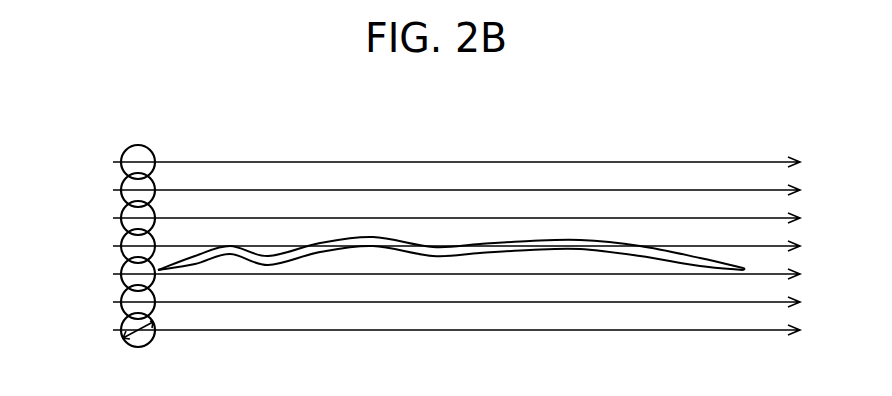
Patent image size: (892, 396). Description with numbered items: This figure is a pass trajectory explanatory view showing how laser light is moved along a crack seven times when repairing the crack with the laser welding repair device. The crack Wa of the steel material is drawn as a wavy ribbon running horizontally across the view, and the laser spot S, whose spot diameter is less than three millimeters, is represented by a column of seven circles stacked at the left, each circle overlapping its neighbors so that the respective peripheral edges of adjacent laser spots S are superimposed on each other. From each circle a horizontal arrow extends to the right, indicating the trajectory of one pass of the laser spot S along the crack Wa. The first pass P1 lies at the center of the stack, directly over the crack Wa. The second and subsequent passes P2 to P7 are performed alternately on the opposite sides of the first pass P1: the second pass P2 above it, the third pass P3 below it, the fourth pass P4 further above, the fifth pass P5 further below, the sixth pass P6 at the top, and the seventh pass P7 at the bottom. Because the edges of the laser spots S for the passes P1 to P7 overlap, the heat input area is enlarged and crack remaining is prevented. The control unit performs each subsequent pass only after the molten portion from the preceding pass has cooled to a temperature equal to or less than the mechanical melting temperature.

The laser spot S is at (140, 145).
The crack Wa is at (515, 250).
The first pass P1 is at (435, 247).
The second pass P2 is at (435, 219).
The third pass P3 is at (435, 275).
The fourth pass P4 is at (435, 191).
The fifth pass P5 is at (435, 303).
The sixth pass P6 is at (435, 163).
The seventh pass P7 is at (435, 331).